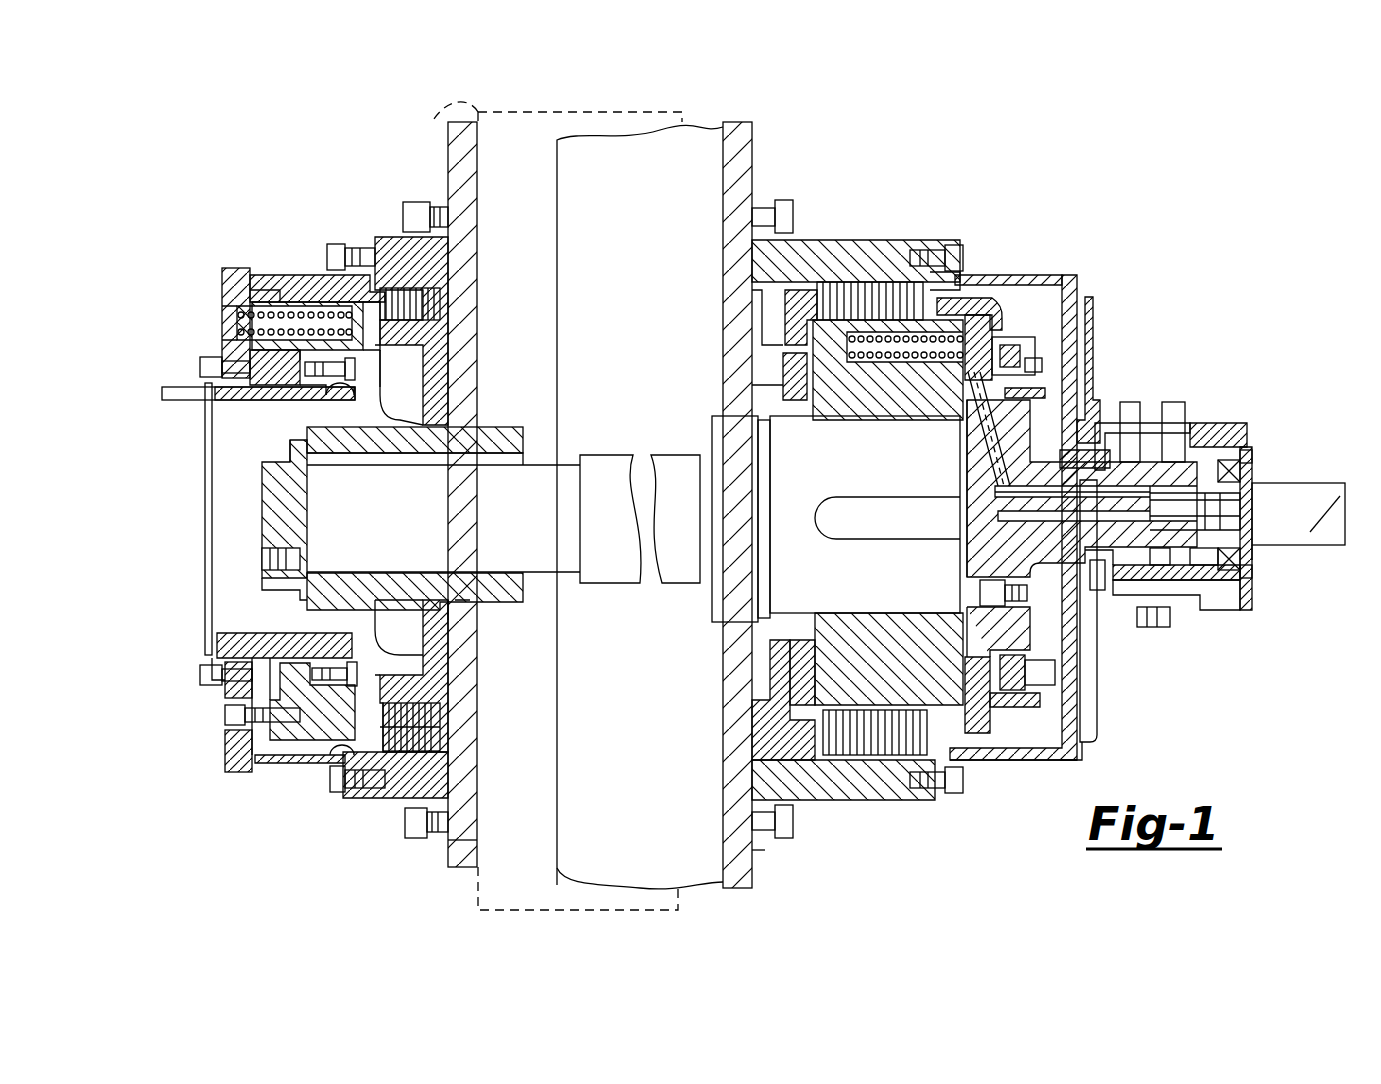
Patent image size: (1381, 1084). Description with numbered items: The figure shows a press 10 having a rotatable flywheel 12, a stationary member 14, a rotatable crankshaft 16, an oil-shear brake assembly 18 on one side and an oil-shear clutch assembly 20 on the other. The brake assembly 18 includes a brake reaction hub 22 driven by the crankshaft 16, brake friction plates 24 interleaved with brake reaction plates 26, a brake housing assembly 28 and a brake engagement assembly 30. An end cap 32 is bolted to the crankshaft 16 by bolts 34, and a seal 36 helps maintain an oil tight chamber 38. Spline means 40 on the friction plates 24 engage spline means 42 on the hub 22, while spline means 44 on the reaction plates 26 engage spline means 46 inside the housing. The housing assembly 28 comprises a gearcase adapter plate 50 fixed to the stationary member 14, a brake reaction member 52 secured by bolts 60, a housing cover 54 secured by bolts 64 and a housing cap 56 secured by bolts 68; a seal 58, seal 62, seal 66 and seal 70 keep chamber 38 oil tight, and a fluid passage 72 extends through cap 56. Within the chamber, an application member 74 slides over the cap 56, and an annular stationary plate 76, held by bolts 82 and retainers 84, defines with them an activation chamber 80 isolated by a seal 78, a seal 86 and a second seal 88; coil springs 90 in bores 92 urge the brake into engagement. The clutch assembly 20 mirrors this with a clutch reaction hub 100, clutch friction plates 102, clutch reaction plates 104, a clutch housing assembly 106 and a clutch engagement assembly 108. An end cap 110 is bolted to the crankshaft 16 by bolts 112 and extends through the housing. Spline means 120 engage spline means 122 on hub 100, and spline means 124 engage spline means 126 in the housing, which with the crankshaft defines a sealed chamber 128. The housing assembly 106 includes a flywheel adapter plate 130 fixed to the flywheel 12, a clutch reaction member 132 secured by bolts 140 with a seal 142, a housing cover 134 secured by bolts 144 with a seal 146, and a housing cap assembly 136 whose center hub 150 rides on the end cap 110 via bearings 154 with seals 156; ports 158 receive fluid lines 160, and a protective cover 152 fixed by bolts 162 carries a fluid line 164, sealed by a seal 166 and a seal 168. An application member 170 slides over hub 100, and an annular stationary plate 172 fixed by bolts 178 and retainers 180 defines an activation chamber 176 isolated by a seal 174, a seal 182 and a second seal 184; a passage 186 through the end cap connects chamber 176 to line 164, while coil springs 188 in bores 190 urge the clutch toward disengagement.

The press 10 is at (862, 152).
The flywheel 12 is at (655, 203).
The stationary member 14 is at (438, 122).
The crankshaft 16 is at (550, 500).
The oil-shear brake assembly 18 is at (302, 168).
The oil-shear clutch assembly 20 is at (1092, 243).
The brake reaction hub 22 is at (400, 582).
The brake friction plates 24 is at (443, 720).
The brake reaction plates 26 is at (443, 745).
The brake housing assembly 28 is at (365, 797).
The brake engagement assembly 30 is at (290, 296).
The end cap 32 is at (280, 495).
The bolts 34 is at (266, 560).
The seal 36 is at (300, 596).
The chamber 38 is at (268, 454).
The spline means 40 is at (445, 325).
The spline means 42 is at (440, 692).
The spline means 44 is at (445, 297).
The spline means 46 is at (332, 760).
The gearcase adapter plate 50 is at (470, 860).
The brake reaction member 52 is at (435, 838).
The housing cover 54 is at (230, 745).
The housing cap 56 is at (222, 650).
The seal 58 is at (470, 600).
The bolts 60 is at (418, 204).
The seal 62 is at (450, 777).
The bolts 64 is at (335, 782).
The seal 66 is at (368, 272).
The bolts 68 is at (205, 364).
The seal 70 is at (208, 680).
The fluid passage 72 is at (215, 437).
The application member 74 is at (275, 765).
The annular stationary plate 76 is at (240, 345).
The seal 78 is at (335, 410).
The activation chamber 80 is at (300, 640).
The bolts 82 is at (445, 657).
The retainers 84 is at (350, 664).
The seal 86 is at (350, 368).
The second seal 88 is at (252, 280).
The coil springs 90 is at (246, 316).
The bores 92 is at (318, 306).
The clutch reaction hub 100 is at (905, 690).
The clutch friction plates 102 is at (855, 262).
The clutch reaction plates 104 is at (870, 285).
The clutch housing assembly 106 is at (950, 250).
The clutch engagement assembly 108 is at (1010, 290).
The end cap 110 is at (1140, 627).
The bolts 112 is at (945, 575).
The spline means 120 is at (978, 298).
The spline means 122 is at (992, 332).
The spline means 124 is at (835, 800).
The spline means 126 is at (955, 775).
The sealed chamber 128 is at (1042, 742).
The flywheel adapter plate 130 is at (760, 852).
The clutch reaction member 132 is at (872, 800).
The housing cover 134 is at (1040, 765).
The housing cap assembly 136 is at (1258, 600).
The bolts 140 is at (785, 207).
The seal 142 is at (790, 290).
The bolts 144 is at (965, 275).
The seal 146 is at (950, 795).
The center hub 150 is at (1215, 590).
The protective cover 152 is at (1228, 423).
The bearings 154 is at (1232, 585).
The seals 156 is at (1165, 590).
The ports 158 is at (1132, 440).
The fluid lines 160 is at (1175, 440).
The bolts 162 is at (1256, 458).
The fluid line 164 is at (1318, 528).
The seal 166 is at (1250, 445).
The seal 168 is at (1255, 558).
The application member 170 is at (1093, 297).
The annular stationary plate 172 is at (1093, 330).
The seal 174 is at (965, 700).
The activation chamber 176 is at (980, 733).
The bolts 178 is at (1084, 742).
The retainers 180 is at (1088, 700).
The seal 182 is at (1088, 322).
The second seal 184 is at (1093, 356).
The passage 186 is at (1000, 516).
The coil springs 188 is at (858, 362).
The bores 190 is at (908, 366).